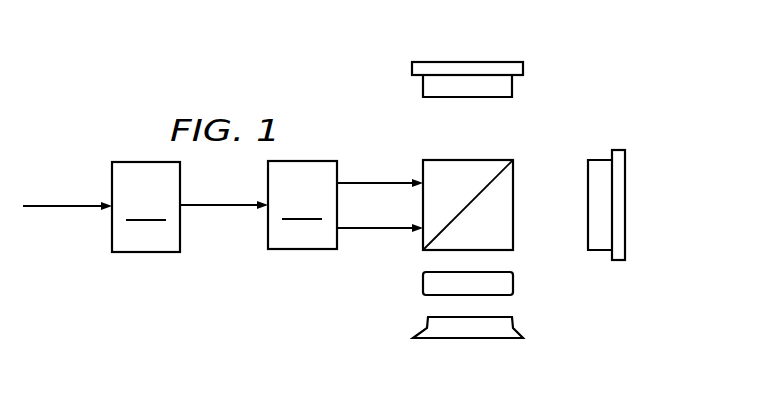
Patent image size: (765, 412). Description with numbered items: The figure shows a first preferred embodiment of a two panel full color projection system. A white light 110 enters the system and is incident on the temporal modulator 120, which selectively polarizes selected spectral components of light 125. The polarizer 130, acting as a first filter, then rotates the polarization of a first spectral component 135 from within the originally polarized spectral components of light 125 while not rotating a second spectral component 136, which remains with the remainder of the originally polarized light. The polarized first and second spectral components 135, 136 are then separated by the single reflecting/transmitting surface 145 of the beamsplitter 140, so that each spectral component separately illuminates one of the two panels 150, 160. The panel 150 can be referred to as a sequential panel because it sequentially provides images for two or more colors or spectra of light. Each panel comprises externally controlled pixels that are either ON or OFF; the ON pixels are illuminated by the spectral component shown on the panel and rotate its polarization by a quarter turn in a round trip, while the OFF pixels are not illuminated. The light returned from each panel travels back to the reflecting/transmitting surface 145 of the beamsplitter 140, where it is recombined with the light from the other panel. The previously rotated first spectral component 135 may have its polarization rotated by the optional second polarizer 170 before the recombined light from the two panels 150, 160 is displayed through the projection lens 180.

The white light 110 is at (72, 208).
The temporal modulator 120 is at (146, 207).
The selected spectral components of light 125 is at (223, 207).
The polarizer 130 is at (302, 205).
The first spectral component 135 is at (383, 181).
The second spectral component 136 is at (385, 231).
The beamsplitter 140 is at (502, 178).
The reflecting/transmitting surface 145 is at (497, 180).
The panel 150 is at (467, 61).
The panel 160 is at (625, 195).
The second polarizer 170 is at (513, 278).
The projection lens 180 is at (472, 339).